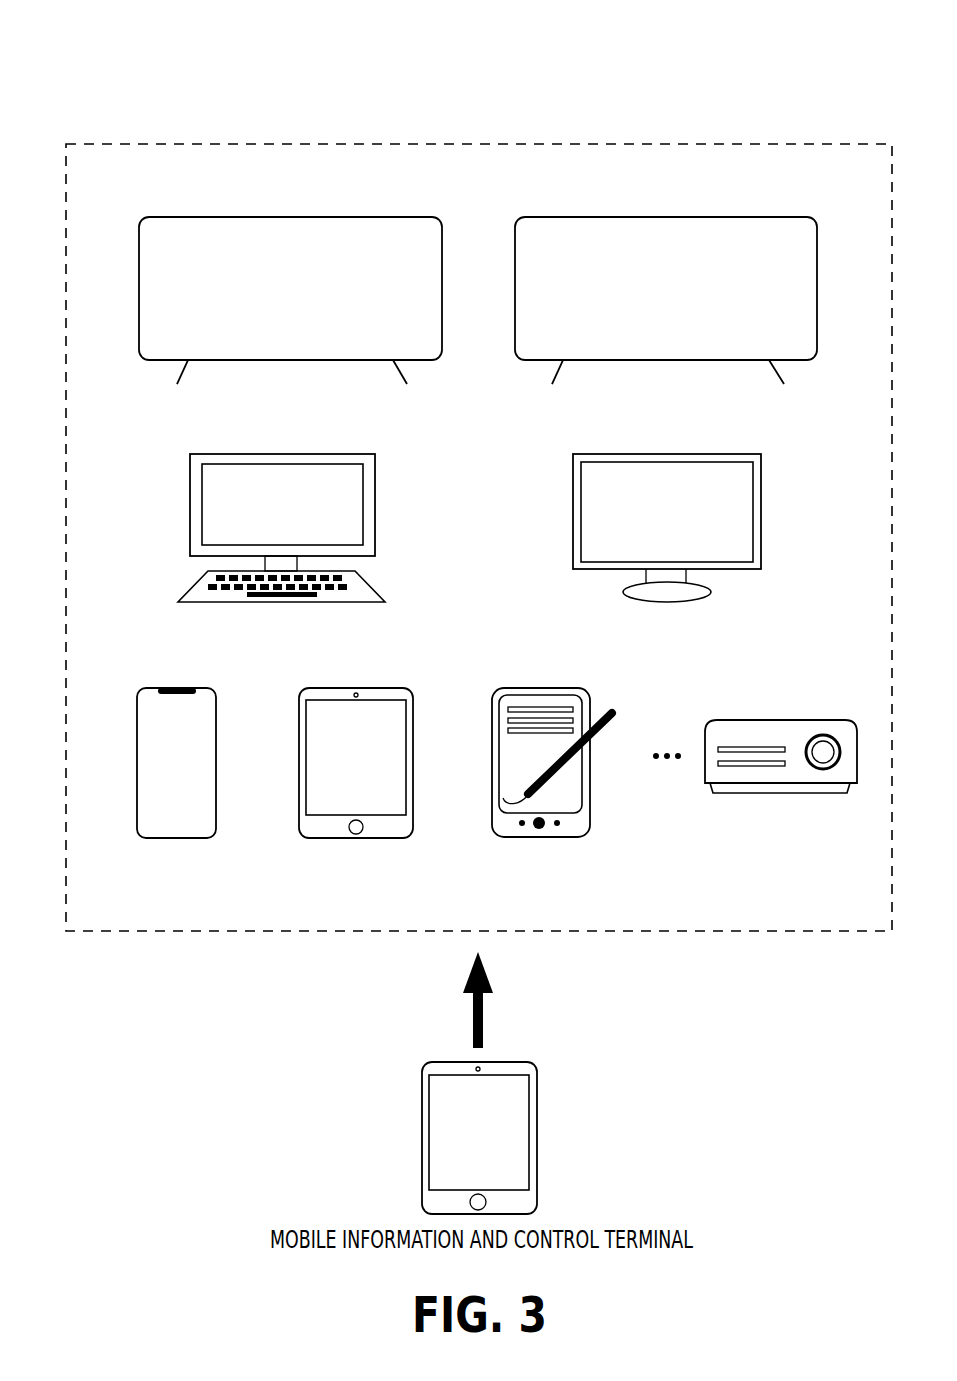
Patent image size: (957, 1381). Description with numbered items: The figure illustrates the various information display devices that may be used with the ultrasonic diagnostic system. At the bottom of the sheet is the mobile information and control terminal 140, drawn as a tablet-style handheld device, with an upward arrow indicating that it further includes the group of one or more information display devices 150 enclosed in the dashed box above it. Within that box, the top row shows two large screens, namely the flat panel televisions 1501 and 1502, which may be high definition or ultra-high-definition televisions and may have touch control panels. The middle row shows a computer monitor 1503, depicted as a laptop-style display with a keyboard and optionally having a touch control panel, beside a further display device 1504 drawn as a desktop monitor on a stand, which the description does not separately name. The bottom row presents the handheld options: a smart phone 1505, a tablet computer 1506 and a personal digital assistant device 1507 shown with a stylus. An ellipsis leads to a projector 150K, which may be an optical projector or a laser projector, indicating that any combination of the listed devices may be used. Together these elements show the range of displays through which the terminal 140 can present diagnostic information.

The information display devices 150 is at (66, 74).
The flat panel television 1501 is at (296, 216).
The flat panel television 1502 is at (671, 216).
The computer monitor 1503 is at (295, 452).
The desktop monitor 1504 is at (671, 452).
The smart phone 1505 is at (183, 687).
The tablet computer 1506 is at (359, 687).
The personal digital assistant device 1507 is at (543, 687).
The projector 150K is at (779, 720).
The mobile information and control terminal 140 is at (538, 1068).